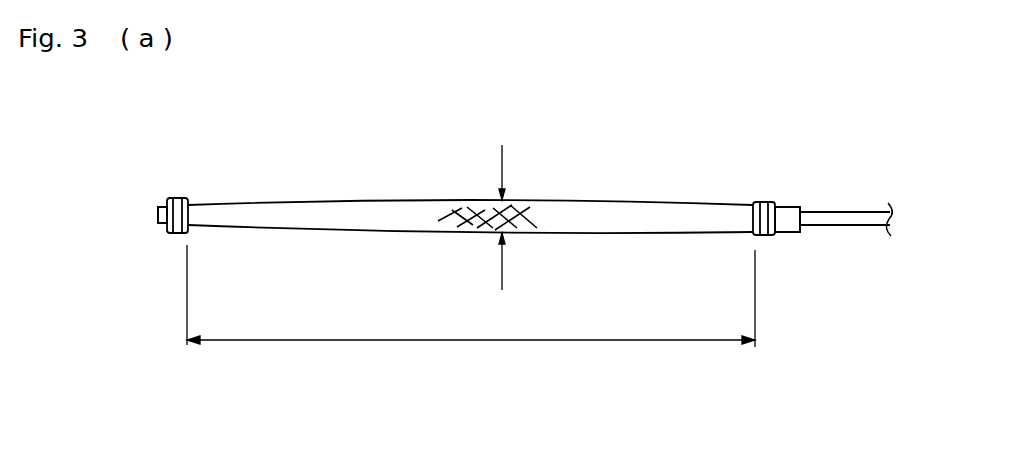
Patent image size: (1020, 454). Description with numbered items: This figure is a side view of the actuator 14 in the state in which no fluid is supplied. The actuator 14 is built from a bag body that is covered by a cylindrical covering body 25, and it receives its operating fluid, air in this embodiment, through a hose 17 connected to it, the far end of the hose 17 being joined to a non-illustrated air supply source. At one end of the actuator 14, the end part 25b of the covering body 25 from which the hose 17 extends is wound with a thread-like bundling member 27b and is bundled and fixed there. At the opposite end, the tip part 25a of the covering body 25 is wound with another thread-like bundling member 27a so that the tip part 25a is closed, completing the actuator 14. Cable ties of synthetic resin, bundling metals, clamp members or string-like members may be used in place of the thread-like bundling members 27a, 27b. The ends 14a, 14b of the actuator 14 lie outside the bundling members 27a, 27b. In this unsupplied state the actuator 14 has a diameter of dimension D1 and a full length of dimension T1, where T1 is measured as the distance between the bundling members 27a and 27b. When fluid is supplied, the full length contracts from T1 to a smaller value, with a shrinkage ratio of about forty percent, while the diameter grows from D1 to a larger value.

The actuator 14 is at (471, 254).
The end of the actuator 14a is at (108, 241).
The end of the actuator 14b is at (787, 219).
The hose 17 is at (842, 212).
The covering body 25 is at (303, 197).
The tip part of the covering body 25a is at (158, 213).
The end part of the covering body 25b is at (785, 205).
The bundling member 27a is at (175, 197).
The bundling member 27b is at (757, 202).
The dimension D1 is at (518, 217).
The dimension T1 is at (471, 296).